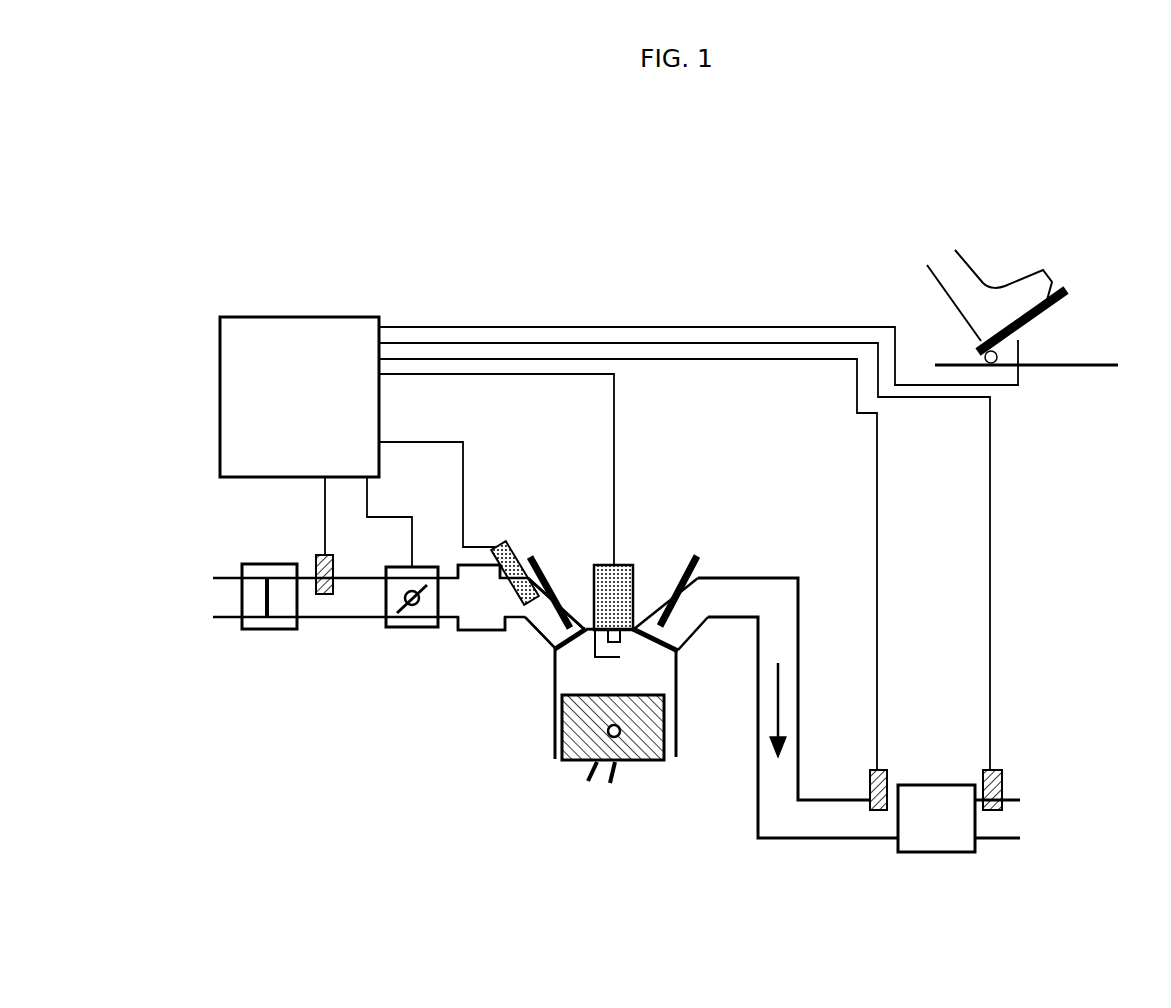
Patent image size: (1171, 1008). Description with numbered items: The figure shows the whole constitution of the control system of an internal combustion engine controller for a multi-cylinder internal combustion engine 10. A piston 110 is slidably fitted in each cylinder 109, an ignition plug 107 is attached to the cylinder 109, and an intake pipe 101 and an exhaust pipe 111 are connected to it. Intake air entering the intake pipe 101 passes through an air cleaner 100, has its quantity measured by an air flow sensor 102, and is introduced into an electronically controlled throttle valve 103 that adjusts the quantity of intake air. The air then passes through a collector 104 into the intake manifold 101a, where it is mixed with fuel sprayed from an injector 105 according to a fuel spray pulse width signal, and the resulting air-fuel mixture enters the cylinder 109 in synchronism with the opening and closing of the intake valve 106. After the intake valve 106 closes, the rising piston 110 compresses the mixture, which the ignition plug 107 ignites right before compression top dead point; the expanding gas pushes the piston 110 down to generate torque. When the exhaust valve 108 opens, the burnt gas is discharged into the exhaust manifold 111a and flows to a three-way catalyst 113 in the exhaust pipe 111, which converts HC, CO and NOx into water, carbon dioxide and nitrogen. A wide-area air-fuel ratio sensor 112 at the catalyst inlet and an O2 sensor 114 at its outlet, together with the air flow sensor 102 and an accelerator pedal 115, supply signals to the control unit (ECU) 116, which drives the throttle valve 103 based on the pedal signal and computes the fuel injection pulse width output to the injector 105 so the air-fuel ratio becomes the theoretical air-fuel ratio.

The internal combustion engine 10 is at (712, 478).
The air cleaner 100 is at (268, 627).
The intake pipe 101 is at (307, 603).
The intake manifold 101a is at (568, 612).
The air flow sensor 102 is at (317, 556).
The electronically controlled throttle valve 103 is at (410, 620).
The collector 104 is at (480, 617).
The injector 105 is at (505, 540).
The intake valve 106 is at (538, 563).
The ignition plug 107 is at (627, 570).
The exhaust valve 108 is at (695, 560).
The cylinder 109 is at (658, 668).
The piston 110 is at (658, 762).
The exhaust pipe 111 is at (837, 807).
The exhaust manifold 111a is at (785, 643).
The wide-area air-fuel ratio sensor 112 is at (883, 770).
The three-way catalyst 113 is at (962, 826).
The O2 sensor 114 is at (1002, 772).
The accelerator pedal 115 is at (1020, 348).
The control unit (ECU) 116 is at (300, 317).